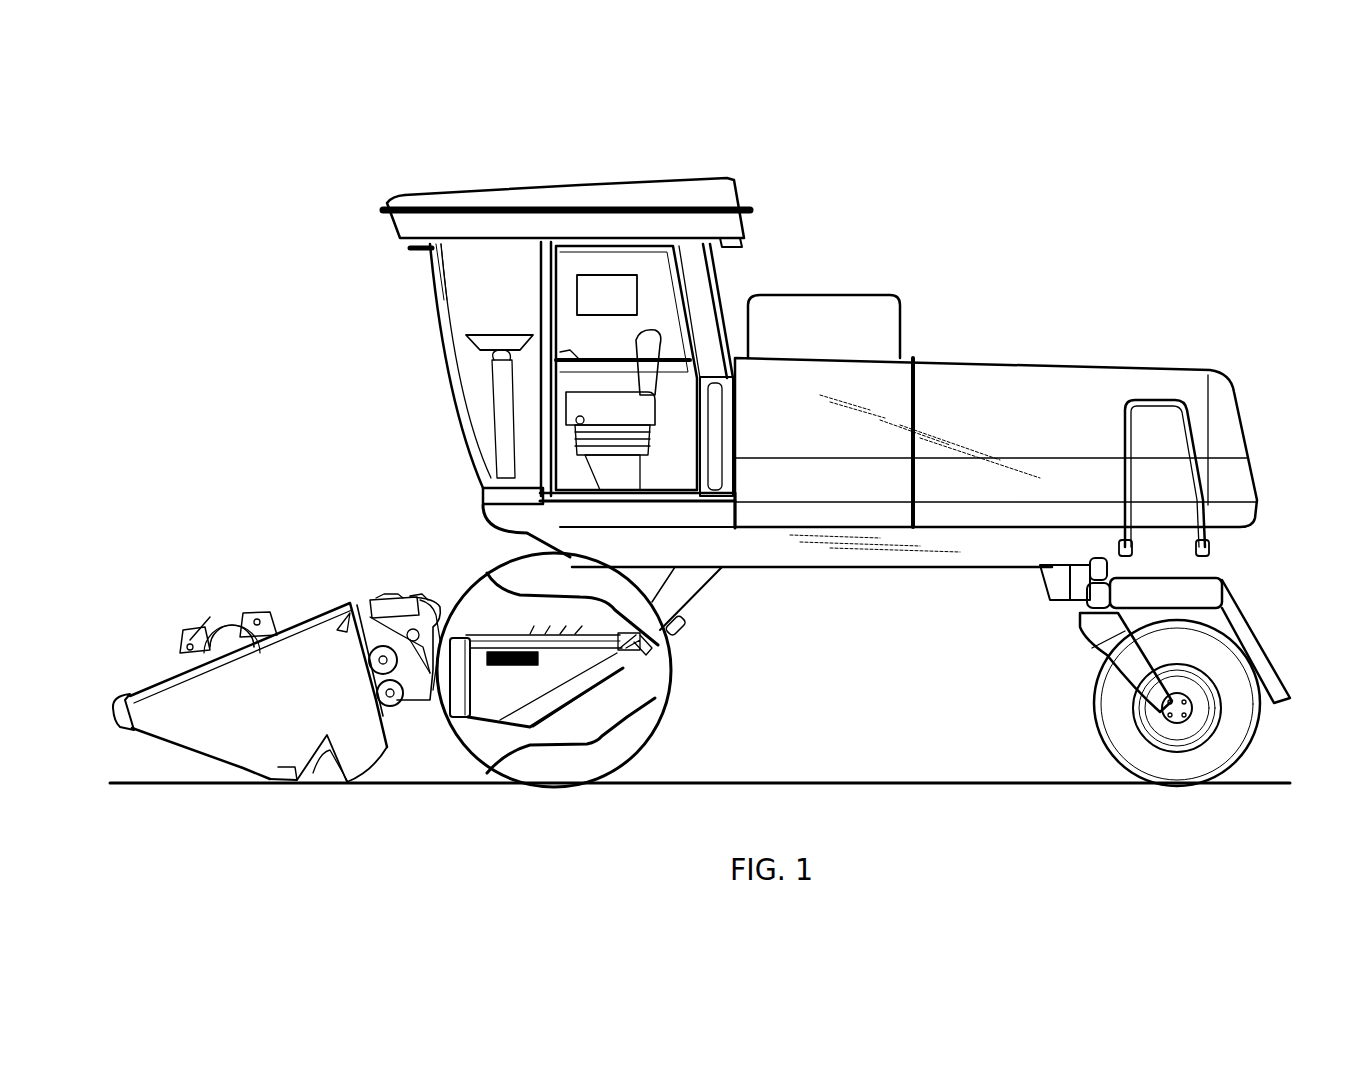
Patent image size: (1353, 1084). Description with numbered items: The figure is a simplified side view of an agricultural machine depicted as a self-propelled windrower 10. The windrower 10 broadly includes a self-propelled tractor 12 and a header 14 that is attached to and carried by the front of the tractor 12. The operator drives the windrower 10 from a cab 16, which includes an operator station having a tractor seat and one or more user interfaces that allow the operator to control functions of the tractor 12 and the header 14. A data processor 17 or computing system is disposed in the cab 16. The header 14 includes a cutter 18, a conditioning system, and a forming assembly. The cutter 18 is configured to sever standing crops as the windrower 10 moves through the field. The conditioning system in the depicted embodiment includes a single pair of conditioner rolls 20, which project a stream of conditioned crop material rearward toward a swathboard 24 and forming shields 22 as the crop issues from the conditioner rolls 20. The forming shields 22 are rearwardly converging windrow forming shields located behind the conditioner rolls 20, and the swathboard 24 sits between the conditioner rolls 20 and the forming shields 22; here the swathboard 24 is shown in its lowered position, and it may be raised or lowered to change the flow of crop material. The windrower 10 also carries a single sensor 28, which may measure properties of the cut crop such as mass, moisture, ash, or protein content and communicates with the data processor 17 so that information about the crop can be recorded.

The self-propelled windrower 10 is at (932, 328).
The self-propelled tractor 12 is at (1055, 378).
The header 14 is at (307, 620).
The cab 16 is at (694, 272).
The data processor 17 is at (603, 283).
The cutter 18 is at (275, 779).
The conditioner rolls 20 is at (378, 664).
The forming shields 22 is at (490, 707).
The swathboard 24 is at (434, 645).
The sensor 28 is at (517, 666).